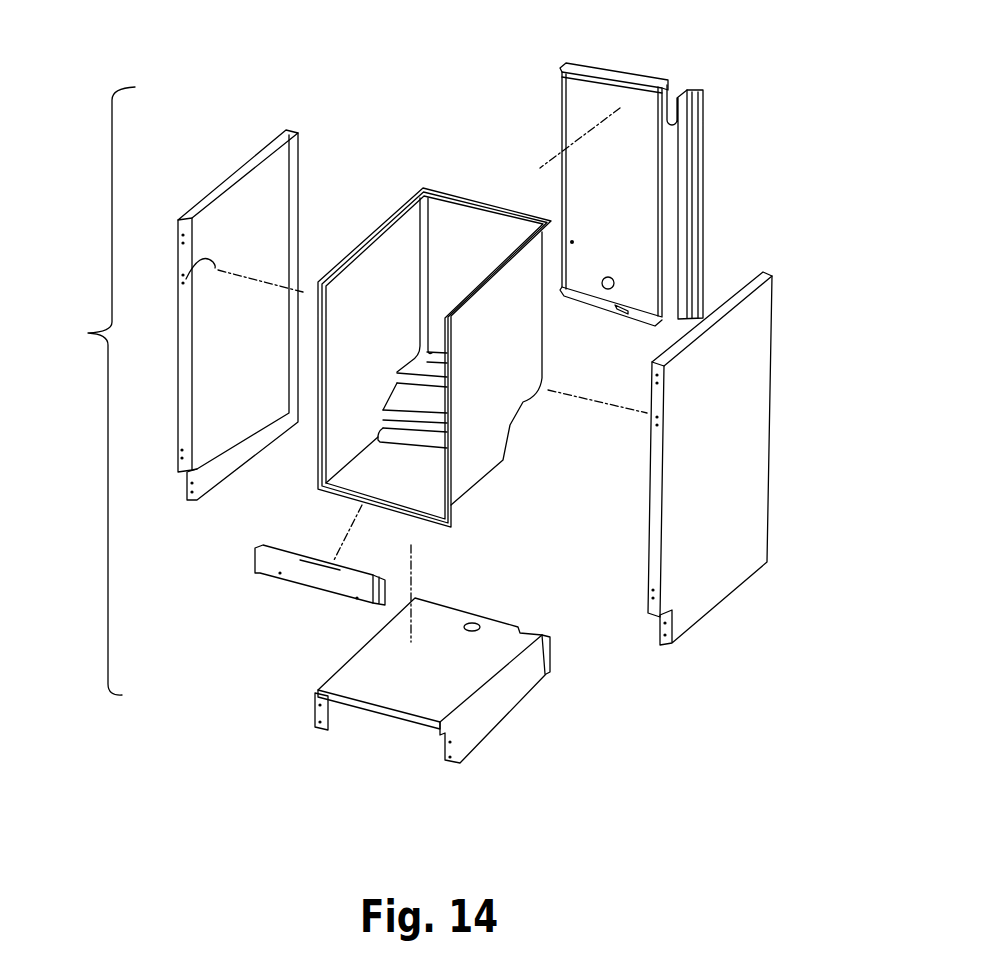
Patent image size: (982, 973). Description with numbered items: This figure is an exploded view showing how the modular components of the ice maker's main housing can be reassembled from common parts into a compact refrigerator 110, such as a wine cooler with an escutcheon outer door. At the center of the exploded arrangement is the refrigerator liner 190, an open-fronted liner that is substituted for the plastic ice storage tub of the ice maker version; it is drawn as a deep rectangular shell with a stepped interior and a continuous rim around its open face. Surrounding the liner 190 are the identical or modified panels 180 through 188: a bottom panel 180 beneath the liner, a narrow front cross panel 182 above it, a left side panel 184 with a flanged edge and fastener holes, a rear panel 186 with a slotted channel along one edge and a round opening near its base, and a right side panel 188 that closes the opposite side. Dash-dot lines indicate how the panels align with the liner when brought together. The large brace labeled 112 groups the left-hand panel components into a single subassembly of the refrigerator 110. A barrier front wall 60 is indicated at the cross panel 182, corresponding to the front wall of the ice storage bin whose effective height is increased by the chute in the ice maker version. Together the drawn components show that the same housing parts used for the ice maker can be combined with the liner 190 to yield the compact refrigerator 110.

The compact refrigerator 110 is at (757, 240).
The hopper housing 112 is at (90, 391).
The barrier front wall 60 is at (333, 585).
The panel 180 is at (315, 727).
The panel 182 is at (252, 577).
The panel 184 is at (185, 281).
The panel 186 is at (615, 137).
The panel 188 is at (750, 465).
The refrigerator liner 190 is at (392, 253).